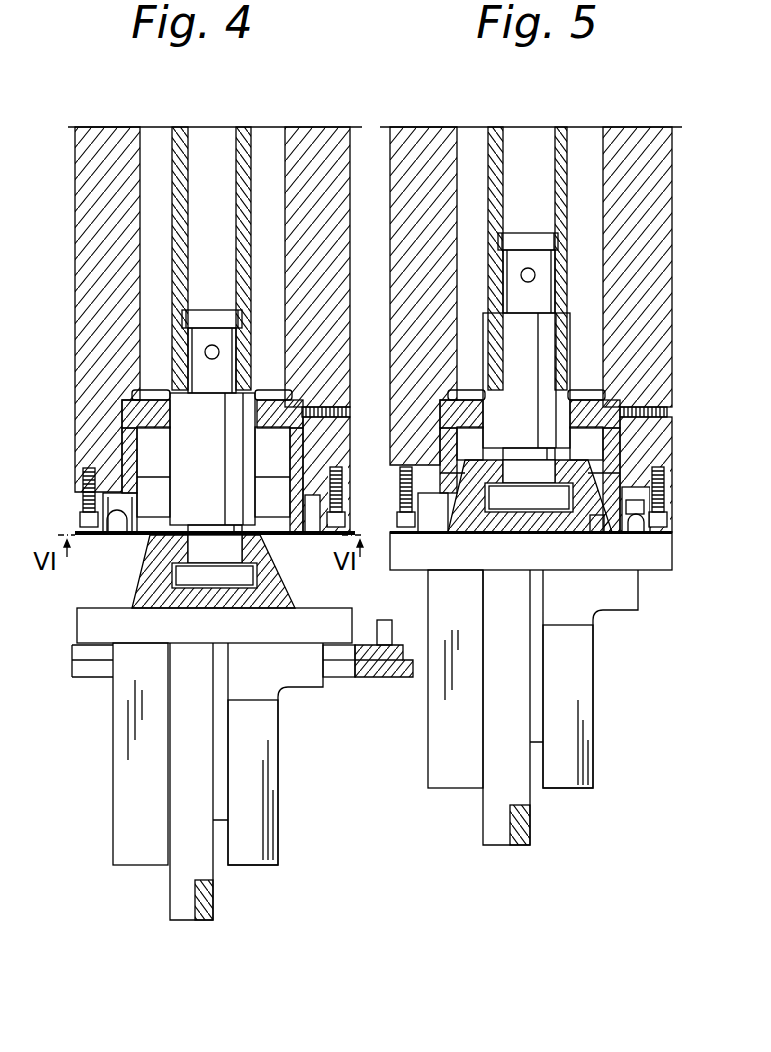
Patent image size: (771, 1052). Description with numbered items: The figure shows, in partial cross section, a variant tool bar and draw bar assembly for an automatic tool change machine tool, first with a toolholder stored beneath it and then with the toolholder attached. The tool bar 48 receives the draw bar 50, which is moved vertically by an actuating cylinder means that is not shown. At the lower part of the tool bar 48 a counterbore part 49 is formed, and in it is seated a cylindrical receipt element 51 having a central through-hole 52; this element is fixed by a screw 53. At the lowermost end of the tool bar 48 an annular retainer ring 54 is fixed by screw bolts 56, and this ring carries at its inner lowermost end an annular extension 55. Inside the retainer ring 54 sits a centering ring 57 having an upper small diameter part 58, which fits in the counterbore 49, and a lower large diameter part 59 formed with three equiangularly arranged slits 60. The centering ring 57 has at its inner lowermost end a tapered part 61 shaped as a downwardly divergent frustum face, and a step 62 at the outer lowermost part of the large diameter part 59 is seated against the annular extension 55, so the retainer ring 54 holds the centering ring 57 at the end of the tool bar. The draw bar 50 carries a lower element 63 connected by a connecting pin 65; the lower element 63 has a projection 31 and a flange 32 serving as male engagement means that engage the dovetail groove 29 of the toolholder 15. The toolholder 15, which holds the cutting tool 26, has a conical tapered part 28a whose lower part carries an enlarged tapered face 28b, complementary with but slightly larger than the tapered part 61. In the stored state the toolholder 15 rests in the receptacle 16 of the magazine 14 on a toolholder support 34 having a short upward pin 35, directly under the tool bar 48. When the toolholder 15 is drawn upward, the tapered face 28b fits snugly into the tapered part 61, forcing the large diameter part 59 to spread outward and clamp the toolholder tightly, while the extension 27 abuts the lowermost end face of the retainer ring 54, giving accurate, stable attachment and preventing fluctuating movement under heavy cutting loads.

In FIG. 4, the magazine 14 is at (392, 676).
In FIG. 4, the toolholder 15 is at (272, 757).
In FIG. 5, the toolholder 15 is at (588, 661).
In FIG. 4, the receptacle 16 is at (345, 668).
In FIG. 4, the cutting tool 26 is at (212, 905).
In FIG. 5, the cutting tool 26 is at (530, 831).
In FIG. 4, the extension 27 is at (142, 638).
In FIG. 5, the extension 27 is at (575, 570).
In FIG. 4, the conical tapered part 28a is at (287, 590).
In FIG. 5, the conical tapered part 28a is at (473, 527).
In FIG. 4, the enlarged tapered face 28b is at (122, 606).
In FIG. 5, the enlarged tapered face 28b is at (453, 570).
In FIG. 4, the dovetail groove 29 is at (198, 596).
In FIG. 5, the dovetail groove 29 is at (516, 512).
In FIG. 4, the projection 31 is at (200, 535).
In FIG. 5, the projection 31 is at (530, 460).
In FIG. 4, the flange 32 is at (225, 592).
In FIG. 5, the flange 32 is at (537, 500).
In FIG. 4, the toolholder support 34 is at (78, 652).
In FIG. 4, the short upward pin 35 is at (385, 620).
In FIG. 4, the tool bar 48 is at (320, 130).
In FIG. 5, the tool bar 48 is at (643, 130).
In FIG. 4, the counterbore part 49 is at (122, 410).
In FIG. 5, the counterbore part 49 is at (440, 438).
In FIG. 4, the draw bar 50 is at (250, 204).
In FIG. 5, the draw bar 50 is at (556, 162).
In FIG. 4, the cylindrical receipt element 51 is at (125, 440).
In FIG. 5, the cylindrical receipt element 51 is at (620, 440).
In FIG. 4, the central through-hole 52 is at (166, 411).
In FIG. 5, the central through-hole 52 is at (483, 406).
In FIG. 4, the screw 53 is at (318, 407).
In FIG. 5, the screw 53 is at (653, 408).
In FIG. 4, the annular retainer ring 54 is at (88, 502).
In FIG. 5, the annular retainer ring 54 is at (668, 500).
In FIG. 5, the annular extension 55 is at (678, 535).
In FIG. 4, the screw bolts 56 is at (80, 532).
In FIG. 5, the screw bolts 56 is at (393, 521).
In FIG. 4, the centering ring 57 is at (302, 529).
In FIG. 5, the centering ring 57 is at (664, 470).
In FIG. 4, the upper small diameter part 58 is at (317, 450).
In FIG. 5, the upper small diameter part 58 is at (623, 455).
In FIG. 4, the lower large diameter part 59 is at (320, 497).
In FIG. 5, the lower large diameter part 59 is at (608, 528).
In FIG. 4, the slits 60 is at (127, 508).
In FIG. 5, the slits 60 is at (437, 517).
In FIG. 4, the tapered part 61 is at (145, 540).
In FIG. 5, the tapered part 61 is at (603, 520).
In FIG. 4, the step 62 is at (115, 530).
In FIG. 5, the step 62 is at (645, 528).
In FIG. 4, the lower element 63 is at (237, 407).
In FIG. 5, the lower element 63 is at (562, 330).
In FIG. 4, the connecting pin 65 is at (211, 345).
In FIG. 5, the connecting pin 65 is at (528, 268).